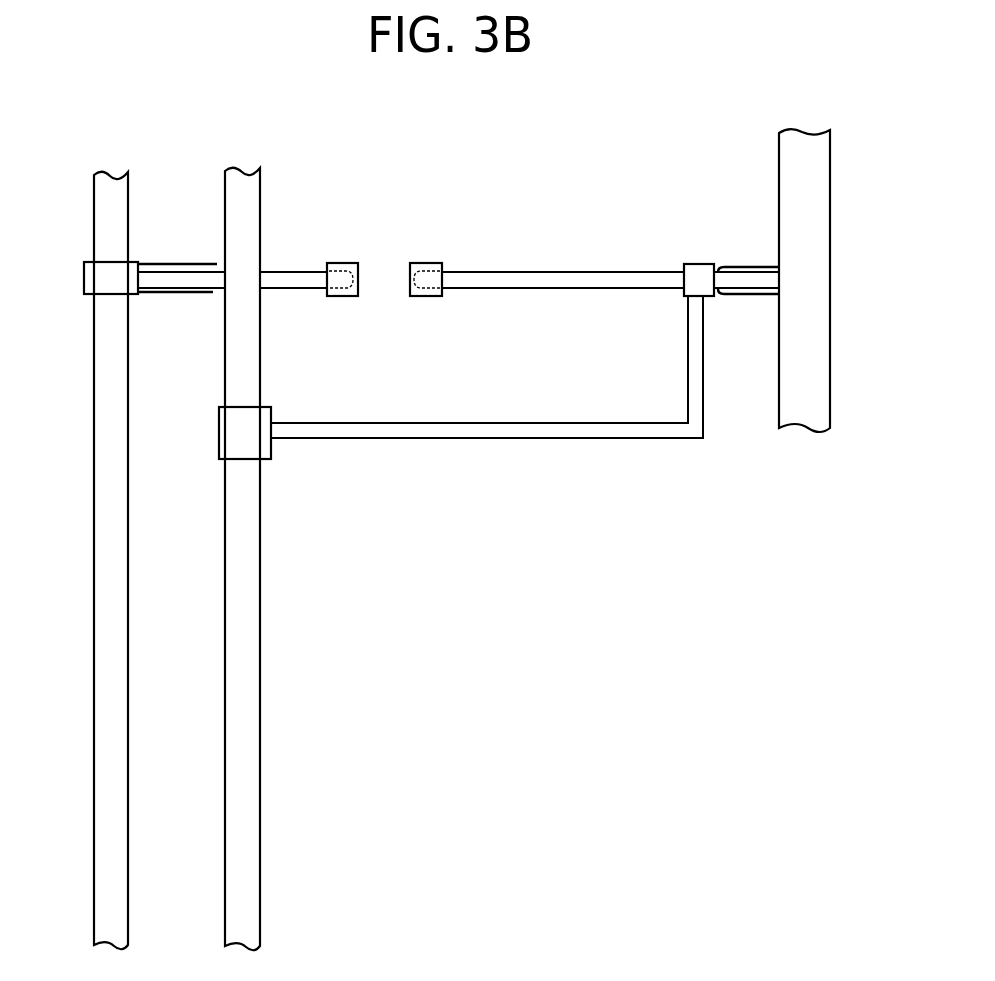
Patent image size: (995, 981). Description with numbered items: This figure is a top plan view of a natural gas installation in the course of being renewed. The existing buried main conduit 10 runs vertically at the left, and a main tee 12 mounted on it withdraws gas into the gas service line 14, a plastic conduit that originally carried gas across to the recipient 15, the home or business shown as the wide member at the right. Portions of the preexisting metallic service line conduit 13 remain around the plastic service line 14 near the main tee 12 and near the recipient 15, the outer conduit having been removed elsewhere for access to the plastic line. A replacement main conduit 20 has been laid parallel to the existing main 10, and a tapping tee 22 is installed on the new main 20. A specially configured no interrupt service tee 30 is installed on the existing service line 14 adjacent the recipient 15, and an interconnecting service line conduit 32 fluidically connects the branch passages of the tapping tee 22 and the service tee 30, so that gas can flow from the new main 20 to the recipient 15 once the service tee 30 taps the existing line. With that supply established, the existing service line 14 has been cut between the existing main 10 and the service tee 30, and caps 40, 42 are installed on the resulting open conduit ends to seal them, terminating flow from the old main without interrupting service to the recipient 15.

The main conduit 10 is at (129, 201).
The main tee 12 is at (101, 280).
The metallic service line conduit 13 is at (200, 292).
The gas service line 14 is at (497, 270).
The recipient 15 is at (807, 209).
The replacement main conduit 20 is at (262, 201).
The tapping tee 22 is at (272, 412).
The No Interrupt Service Tee 30 is at (698, 264).
The interconnecting service line conduit 32 is at (467, 432).
The cap 40 is at (420, 263).
The cap 42 is at (342, 263).